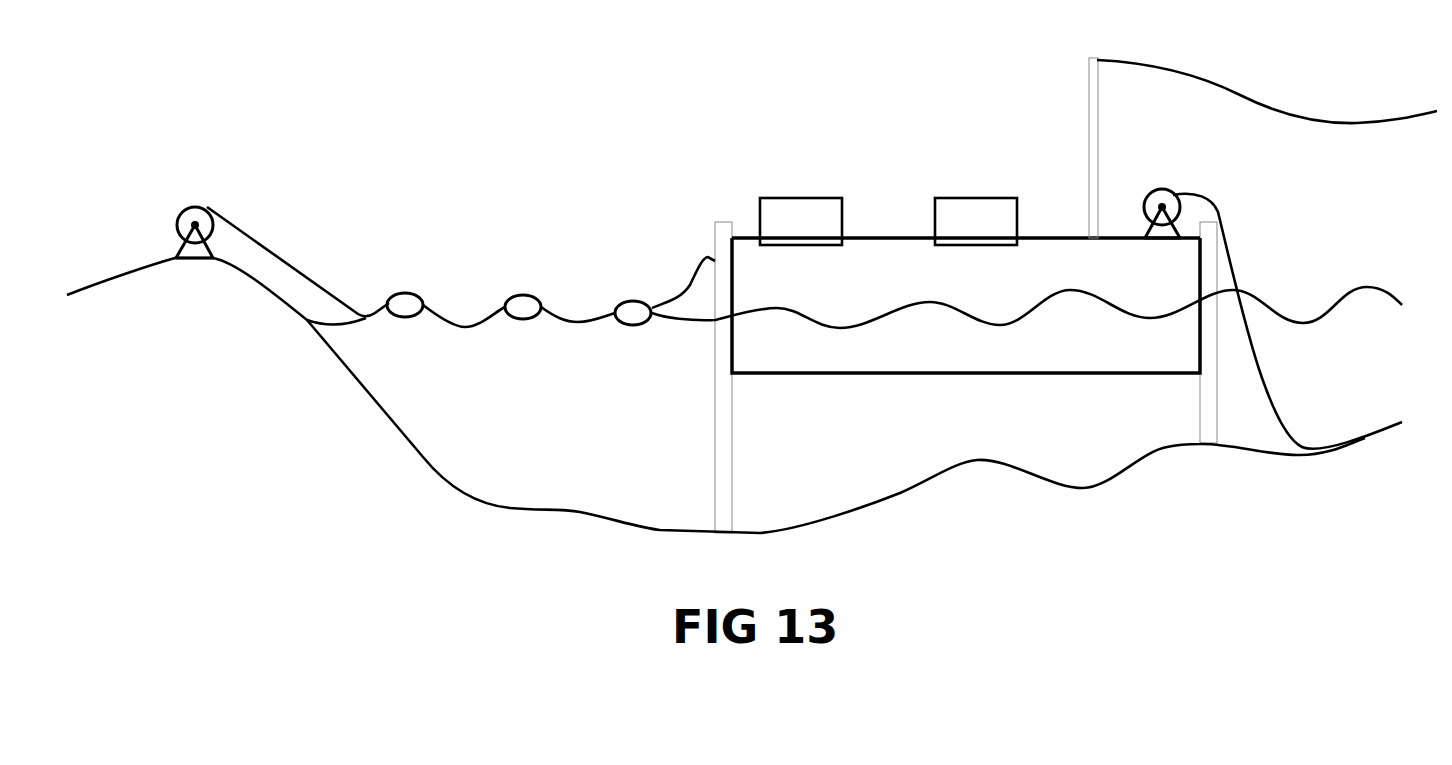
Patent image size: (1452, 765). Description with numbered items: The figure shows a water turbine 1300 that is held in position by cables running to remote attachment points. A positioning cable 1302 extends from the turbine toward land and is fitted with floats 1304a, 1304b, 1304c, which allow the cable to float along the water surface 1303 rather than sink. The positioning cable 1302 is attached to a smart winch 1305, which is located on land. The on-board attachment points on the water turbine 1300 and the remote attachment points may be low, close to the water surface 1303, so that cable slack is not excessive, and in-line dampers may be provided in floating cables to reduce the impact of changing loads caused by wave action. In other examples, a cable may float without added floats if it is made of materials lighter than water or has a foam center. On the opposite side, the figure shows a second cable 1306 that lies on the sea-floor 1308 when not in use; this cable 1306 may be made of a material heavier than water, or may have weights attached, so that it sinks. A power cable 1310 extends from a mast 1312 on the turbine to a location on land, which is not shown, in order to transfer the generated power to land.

The water turbine 1300 is at (892, 237).
The positioning cable 1302 is at (307, 277).
The surface 1303 is at (1335, 293).
The float 1304a is at (408, 292).
The float 1304b is at (524, 295).
The float 1304c is at (632, 300).
The smart winch 1305 is at (182, 205).
The cable 1306 is at (1276, 412).
The sea-floor 1308 is at (585, 510).
The power cable 1310 is at (1325, 120).
The mast 1312 is at (1089, 150).